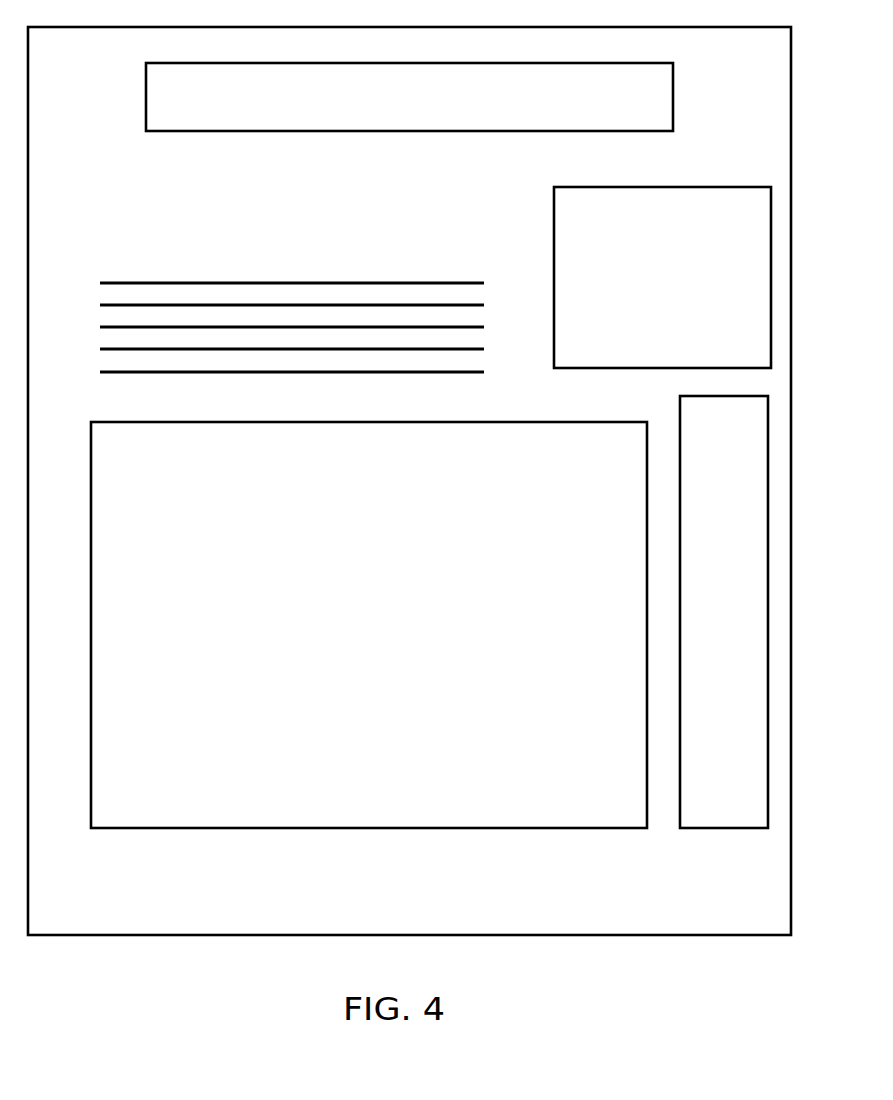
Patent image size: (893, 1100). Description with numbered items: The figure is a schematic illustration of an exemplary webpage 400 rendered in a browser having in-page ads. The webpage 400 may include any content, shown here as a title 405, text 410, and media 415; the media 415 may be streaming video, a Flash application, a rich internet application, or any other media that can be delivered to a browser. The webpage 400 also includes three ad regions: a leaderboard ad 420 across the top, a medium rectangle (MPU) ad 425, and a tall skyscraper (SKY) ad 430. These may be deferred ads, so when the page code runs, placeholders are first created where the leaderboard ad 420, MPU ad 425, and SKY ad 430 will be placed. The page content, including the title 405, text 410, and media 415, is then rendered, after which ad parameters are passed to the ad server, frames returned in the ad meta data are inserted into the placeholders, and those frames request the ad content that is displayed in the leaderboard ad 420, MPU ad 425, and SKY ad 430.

The webpage 400 is at (196, 968).
The title 405 is at (372, 193).
The text 410 is at (238, 282).
The media 415 is at (393, 829).
The leaderboard ad 420 is at (648, 133).
The medium rectangle (MPU) ad 425 is at (554, 250).
The skyscraper (SKY) ad 430 is at (714, 830).